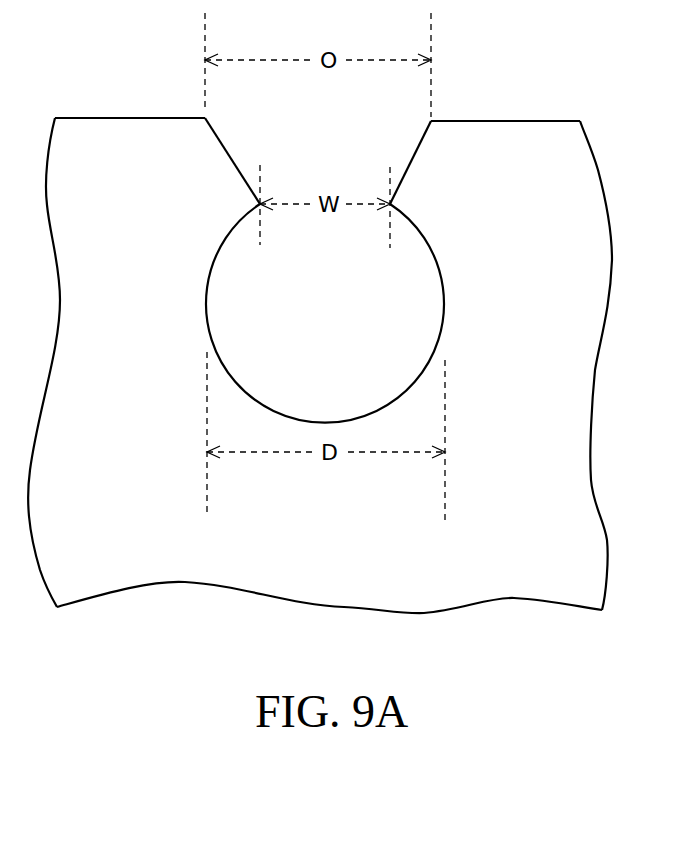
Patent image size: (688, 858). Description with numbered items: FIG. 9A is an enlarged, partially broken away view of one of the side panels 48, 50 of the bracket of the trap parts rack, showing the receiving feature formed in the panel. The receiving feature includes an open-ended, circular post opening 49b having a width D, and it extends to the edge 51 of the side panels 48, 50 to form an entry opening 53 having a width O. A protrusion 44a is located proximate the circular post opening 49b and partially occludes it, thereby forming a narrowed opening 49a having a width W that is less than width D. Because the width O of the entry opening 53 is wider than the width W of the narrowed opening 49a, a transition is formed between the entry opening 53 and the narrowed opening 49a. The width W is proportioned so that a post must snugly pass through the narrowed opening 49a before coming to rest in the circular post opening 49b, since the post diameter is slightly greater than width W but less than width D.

The side panel 48 is at (320, 320).
The side panel 50 is at (320, 320).
The edge 51 is at (497, 121).
The entry opening 53 is at (205, 117).
The narrowed opening 49a is at (327, 152).
The circular post opening 49b is at (325, 313).
The protrusion 44a is at (258, 204).